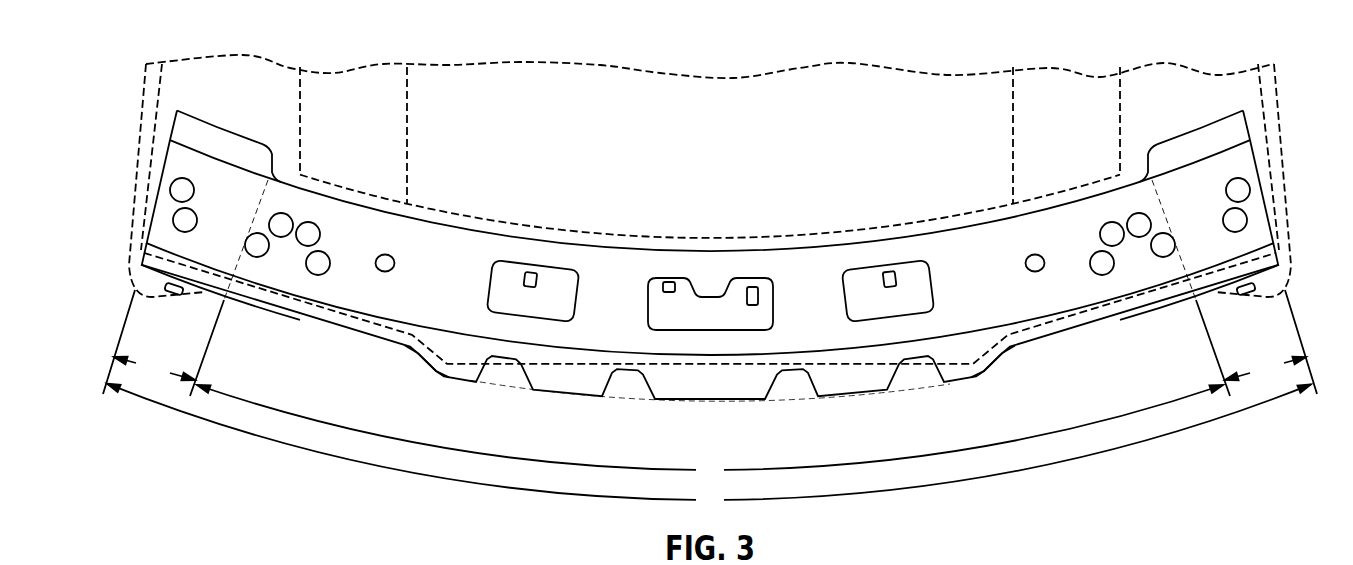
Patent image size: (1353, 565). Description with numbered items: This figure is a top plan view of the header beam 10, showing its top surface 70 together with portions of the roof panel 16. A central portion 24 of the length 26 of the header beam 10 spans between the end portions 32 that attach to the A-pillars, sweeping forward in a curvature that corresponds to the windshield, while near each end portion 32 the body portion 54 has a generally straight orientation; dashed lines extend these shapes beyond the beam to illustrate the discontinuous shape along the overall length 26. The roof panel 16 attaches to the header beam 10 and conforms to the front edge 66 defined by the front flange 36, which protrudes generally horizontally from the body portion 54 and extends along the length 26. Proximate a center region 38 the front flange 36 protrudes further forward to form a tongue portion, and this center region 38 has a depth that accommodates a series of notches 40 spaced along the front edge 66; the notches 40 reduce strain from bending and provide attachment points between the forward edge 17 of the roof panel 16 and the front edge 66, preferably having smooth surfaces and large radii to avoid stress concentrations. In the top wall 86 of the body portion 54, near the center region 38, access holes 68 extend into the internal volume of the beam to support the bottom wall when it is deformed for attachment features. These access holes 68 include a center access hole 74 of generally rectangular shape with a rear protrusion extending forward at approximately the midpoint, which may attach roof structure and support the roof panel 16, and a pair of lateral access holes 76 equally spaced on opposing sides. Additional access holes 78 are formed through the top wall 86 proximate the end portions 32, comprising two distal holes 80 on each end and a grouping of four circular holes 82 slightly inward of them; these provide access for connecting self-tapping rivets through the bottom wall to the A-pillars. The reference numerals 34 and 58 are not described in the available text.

The header beam 10 is at (640, 240).
The roof panel 16 is at (702, 138).
The forward edge of the roof panel 17 is at (630, 400).
The central portion 24 is at (710, 433).
The length 26 is at (709, 447).
The end portions 32 is at (710, 288).
The end portion 34 is at (227, 335).
The front flange 36 is at (377, 337).
The center region 38 is at (567, 388).
The notches 40 is at (507, 373).
The body portion 54 is at (462, 265).
The mounting bracket 58 is at (220, 143).
The front edge 66 is at (420, 367).
The access holes 68 is at (711, 252).
The top surface 70 is at (1002, 253).
The center access hole 74 is at (713, 305).
The lateral access holes 76 is at (550, 290).
The additional access holes 78 is at (712, 241).
The distal holes 80 is at (185, 220).
The circular holes 82 is at (318, 263).
The top wall 86 is at (805, 292).